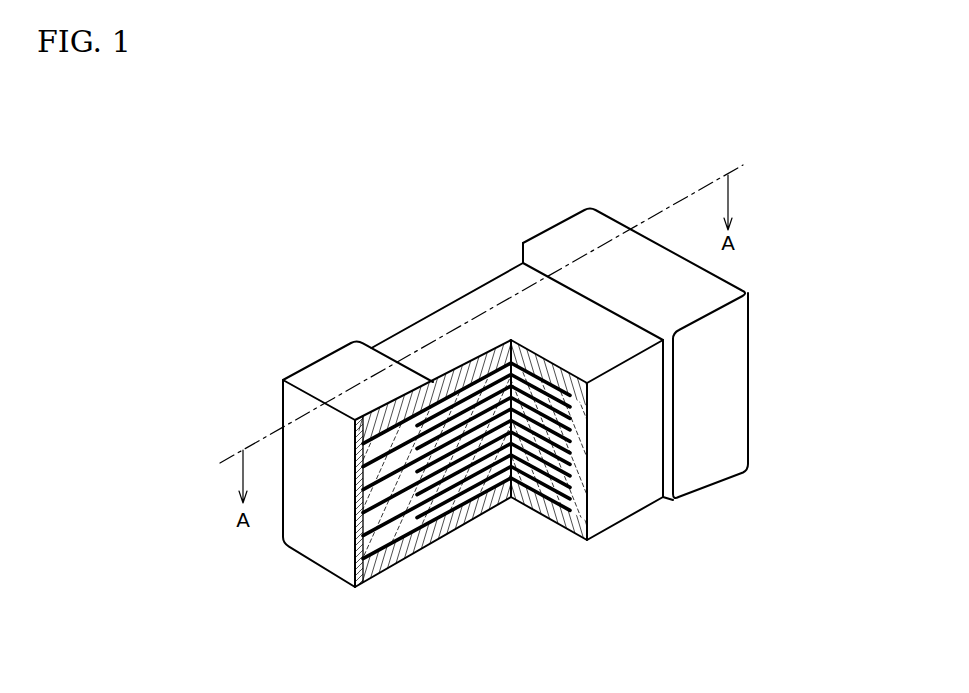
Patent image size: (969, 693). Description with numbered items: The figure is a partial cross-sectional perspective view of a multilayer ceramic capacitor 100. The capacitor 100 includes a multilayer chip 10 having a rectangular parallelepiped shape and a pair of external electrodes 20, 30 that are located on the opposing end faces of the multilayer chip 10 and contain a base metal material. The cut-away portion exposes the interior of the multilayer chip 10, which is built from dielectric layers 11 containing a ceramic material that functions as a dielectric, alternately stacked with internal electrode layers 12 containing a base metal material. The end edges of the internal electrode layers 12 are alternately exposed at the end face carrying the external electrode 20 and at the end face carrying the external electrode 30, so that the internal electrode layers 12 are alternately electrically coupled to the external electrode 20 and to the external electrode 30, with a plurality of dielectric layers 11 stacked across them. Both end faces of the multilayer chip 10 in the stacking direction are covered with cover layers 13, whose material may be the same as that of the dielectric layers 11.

The multilayer ceramic capacitor 100 is at (826, 153).
The multilayer chip 10 is at (494, 425).
The dielectric layer 11 is at (450, 504).
The internal electrode layer 12 is at (483, 493).
The cover layer 13 is at (487, 295).
The external electrode 20 is at (327, 352).
The external electrode 30 is at (557, 238).